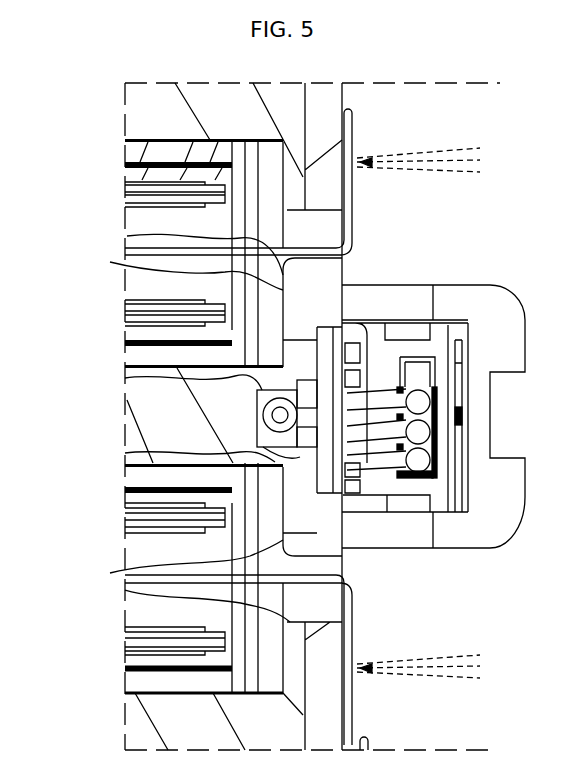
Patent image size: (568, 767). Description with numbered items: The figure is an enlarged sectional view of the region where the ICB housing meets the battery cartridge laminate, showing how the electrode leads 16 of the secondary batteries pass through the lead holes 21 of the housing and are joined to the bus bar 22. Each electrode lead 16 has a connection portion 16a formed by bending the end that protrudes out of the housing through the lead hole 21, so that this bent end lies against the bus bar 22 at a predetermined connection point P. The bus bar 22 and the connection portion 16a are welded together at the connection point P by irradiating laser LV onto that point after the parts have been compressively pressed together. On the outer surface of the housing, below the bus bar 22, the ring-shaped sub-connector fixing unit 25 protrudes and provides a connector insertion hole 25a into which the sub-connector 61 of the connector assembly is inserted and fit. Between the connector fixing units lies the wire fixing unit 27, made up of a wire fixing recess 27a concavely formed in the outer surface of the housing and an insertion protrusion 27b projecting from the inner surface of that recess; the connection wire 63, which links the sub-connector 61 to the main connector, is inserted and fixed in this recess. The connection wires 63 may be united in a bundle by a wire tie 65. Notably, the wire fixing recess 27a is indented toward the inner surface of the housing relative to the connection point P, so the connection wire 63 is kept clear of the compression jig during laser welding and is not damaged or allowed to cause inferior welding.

The electrode lead 16 is at (125, 259).
The connection portion 16a is at (346, 138).
The lead hole 21 is at (324, 278).
The bus bar 22 is at (338, 101).
The sub-connector fixing unit 25 is at (496, 262).
The connector insertion hole 25a is at (408, 318).
The wire fixing unit 27 is at (315, 450).
The wire fixing recess 27a is at (300, 396).
The insertion protrusion 27b is at (297, 462).
The sub-connector 61 is at (377, 337).
The connection wire 63 is at (242, 418).
The wire tie 65 is at (390, 457).
The connection point P is at (376, 188).
The laser LV is at (469, 152).